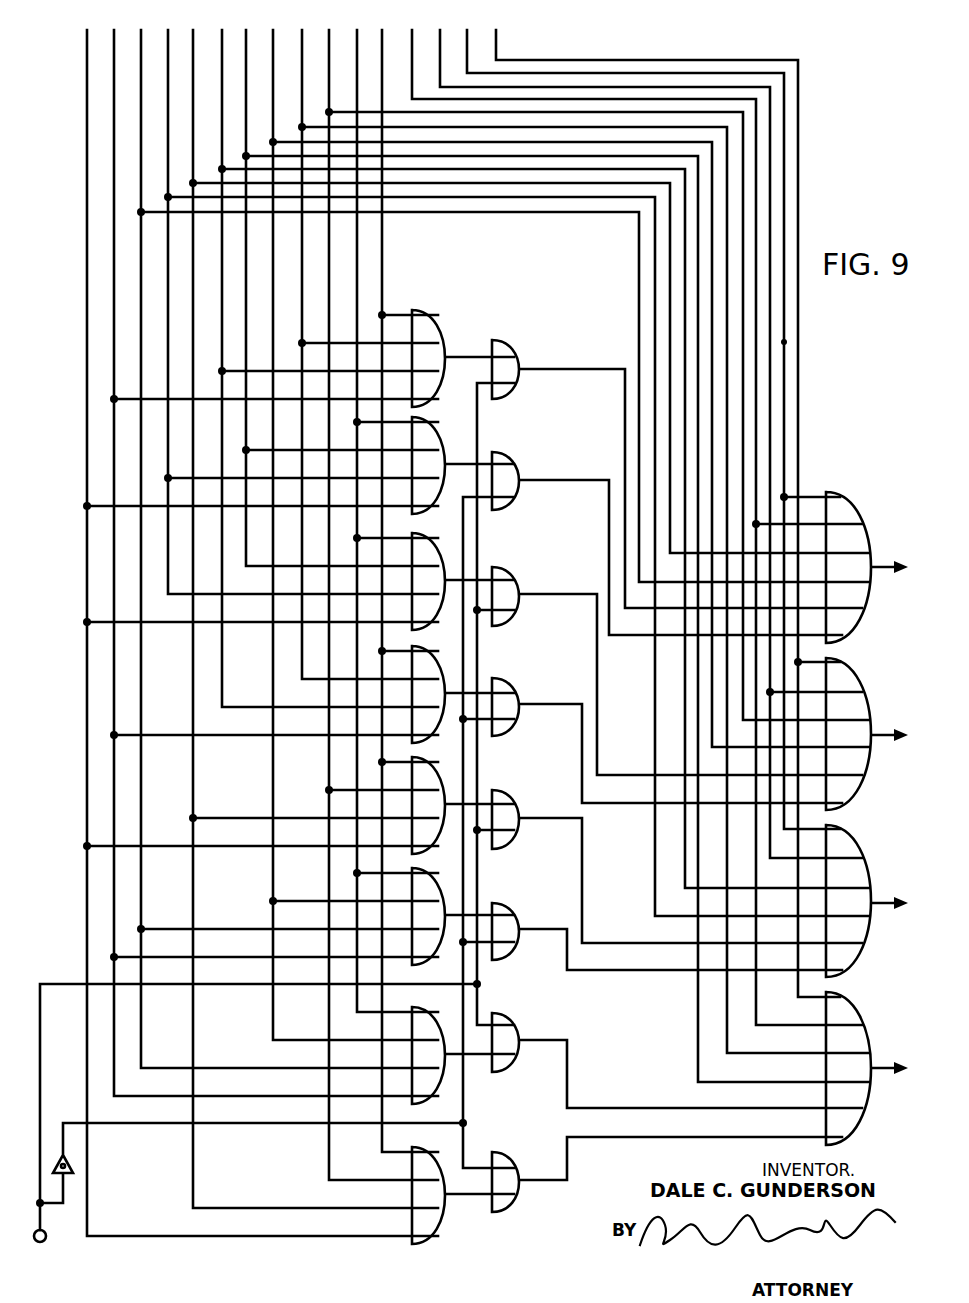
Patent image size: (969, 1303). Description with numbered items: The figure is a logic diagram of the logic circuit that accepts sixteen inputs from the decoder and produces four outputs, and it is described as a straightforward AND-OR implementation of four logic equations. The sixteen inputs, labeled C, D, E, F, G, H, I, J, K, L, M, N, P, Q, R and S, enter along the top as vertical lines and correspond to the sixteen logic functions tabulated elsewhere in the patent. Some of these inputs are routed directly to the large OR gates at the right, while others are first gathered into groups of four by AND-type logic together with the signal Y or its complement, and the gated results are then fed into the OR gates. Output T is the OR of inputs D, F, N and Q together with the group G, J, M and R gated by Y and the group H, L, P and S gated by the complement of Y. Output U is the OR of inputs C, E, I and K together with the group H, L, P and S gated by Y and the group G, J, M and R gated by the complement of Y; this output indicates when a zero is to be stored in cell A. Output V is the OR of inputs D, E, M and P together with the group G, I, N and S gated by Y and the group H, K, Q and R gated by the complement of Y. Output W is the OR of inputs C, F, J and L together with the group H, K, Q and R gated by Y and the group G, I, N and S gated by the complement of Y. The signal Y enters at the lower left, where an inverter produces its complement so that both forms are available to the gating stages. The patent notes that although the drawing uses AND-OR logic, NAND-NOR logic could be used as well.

The input S is at (259, 624).
The input R is at (273, 554).
The input Q is at (502, 540).
The input P is at (515, 464).
The input N is at (528, 610).
The input M is at (542, 450).
The input L is at (555, 547).
The input K is at (568, 526).
The input J is at (582, 533).
The input I is at (597, 596).
The input H is at (394, 512).
The input G is at (407, 582).
The input F is at (634, 519).
The input E is at (648, 435).
The input D is at (650, 421).
The input C is at (665, 505).
The output T is at (867, 567).
The output U is at (867, 734).
The output V is at (867, 901).
The output W is at (867, 1068).
The signal Y is at (71, 1101).